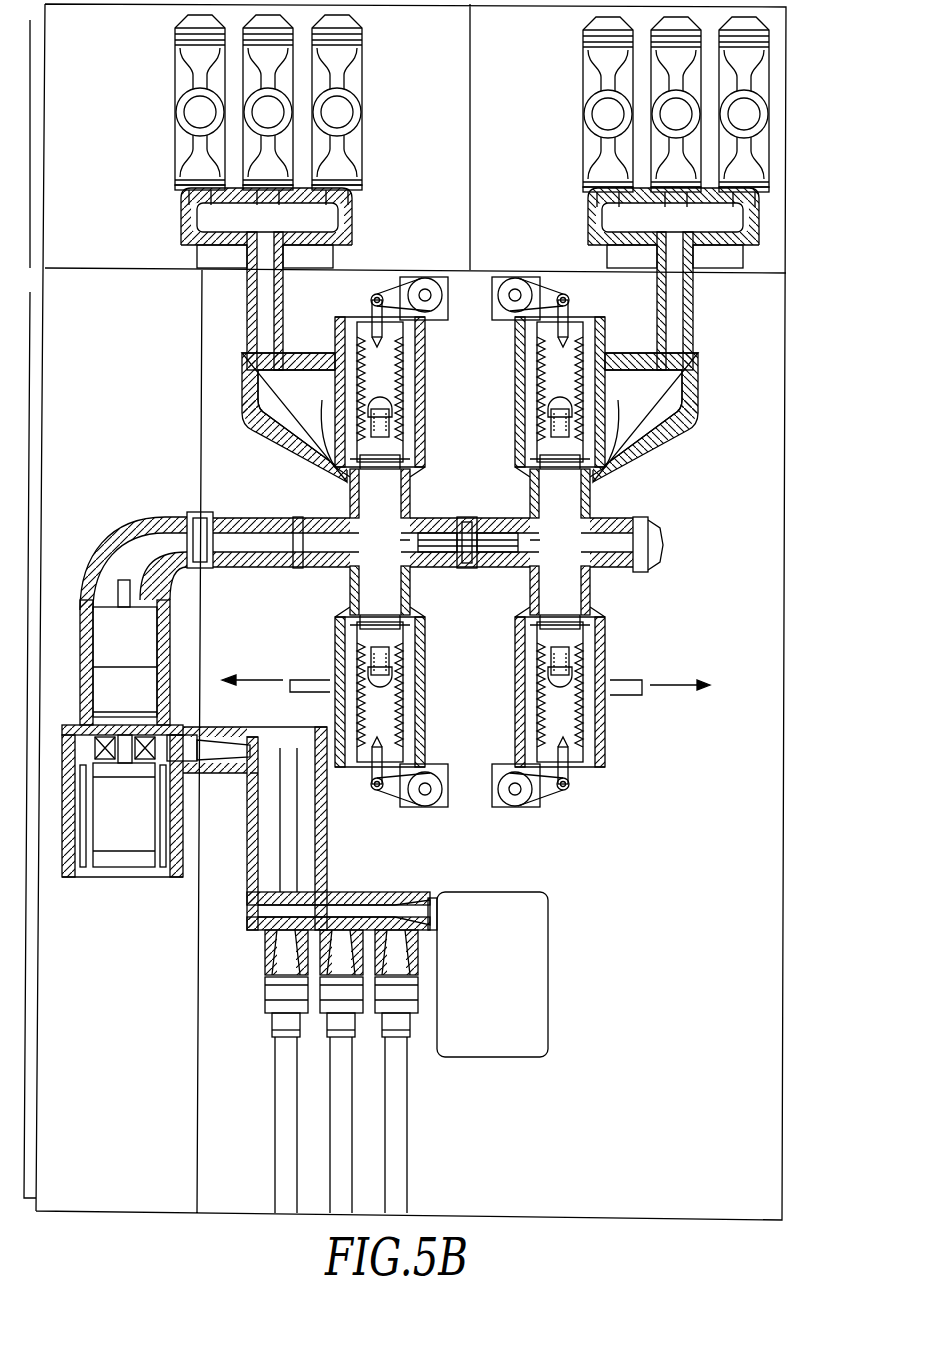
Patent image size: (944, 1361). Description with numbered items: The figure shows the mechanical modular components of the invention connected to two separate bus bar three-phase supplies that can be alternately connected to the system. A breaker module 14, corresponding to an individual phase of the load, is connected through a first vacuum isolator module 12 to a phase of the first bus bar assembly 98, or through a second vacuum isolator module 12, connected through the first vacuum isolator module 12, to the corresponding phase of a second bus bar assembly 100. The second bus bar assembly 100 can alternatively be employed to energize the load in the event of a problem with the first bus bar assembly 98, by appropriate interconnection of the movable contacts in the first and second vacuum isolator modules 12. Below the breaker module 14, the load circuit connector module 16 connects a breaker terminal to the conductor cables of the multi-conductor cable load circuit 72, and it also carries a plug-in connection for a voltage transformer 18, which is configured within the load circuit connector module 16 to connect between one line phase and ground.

The first bus bar assembly 98 is at (378, 65).
The second bus bar assembly 100 is at (800, 110).
The vacuum isolator module 12 is at (445, 403).
The breaker module 14 is at (84, 563).
The load circuit connector module 16 is at (345, 849).
The voltage transformer 18 is at (572, 942).
The multi-conductor cable load circuit 72 is at (243, 1070).